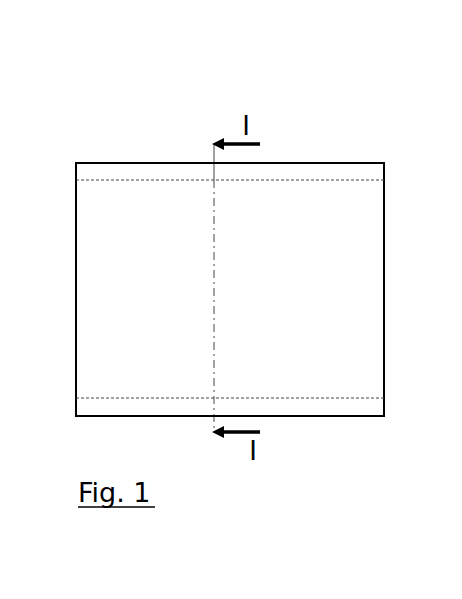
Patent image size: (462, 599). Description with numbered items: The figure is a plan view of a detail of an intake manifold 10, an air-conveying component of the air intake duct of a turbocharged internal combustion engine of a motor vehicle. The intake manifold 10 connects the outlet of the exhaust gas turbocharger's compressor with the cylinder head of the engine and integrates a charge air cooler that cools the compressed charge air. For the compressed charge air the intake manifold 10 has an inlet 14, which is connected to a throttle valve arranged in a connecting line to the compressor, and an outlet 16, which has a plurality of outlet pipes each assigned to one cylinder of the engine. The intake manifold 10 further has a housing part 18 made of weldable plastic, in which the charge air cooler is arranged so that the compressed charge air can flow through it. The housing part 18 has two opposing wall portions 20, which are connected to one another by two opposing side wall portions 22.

The intake manifold 10 is at (40, 104).
The inlet 14 is at (386, 300).
The outlet 16 is at (73, 262).
The housing part 18 is at (185, 175).
The wall portions 20 is at (304, 200).
The side wall portions 22 is at (137, 162).